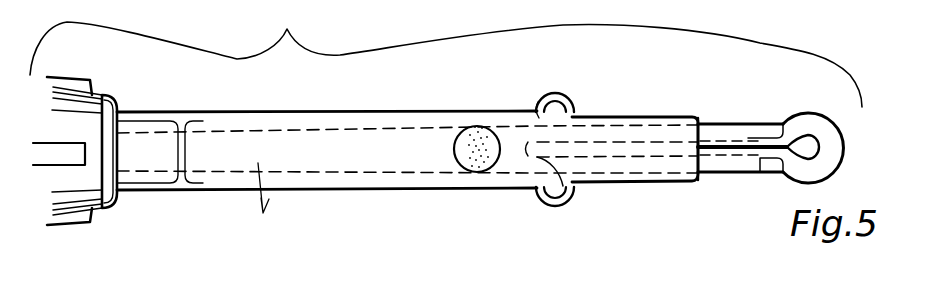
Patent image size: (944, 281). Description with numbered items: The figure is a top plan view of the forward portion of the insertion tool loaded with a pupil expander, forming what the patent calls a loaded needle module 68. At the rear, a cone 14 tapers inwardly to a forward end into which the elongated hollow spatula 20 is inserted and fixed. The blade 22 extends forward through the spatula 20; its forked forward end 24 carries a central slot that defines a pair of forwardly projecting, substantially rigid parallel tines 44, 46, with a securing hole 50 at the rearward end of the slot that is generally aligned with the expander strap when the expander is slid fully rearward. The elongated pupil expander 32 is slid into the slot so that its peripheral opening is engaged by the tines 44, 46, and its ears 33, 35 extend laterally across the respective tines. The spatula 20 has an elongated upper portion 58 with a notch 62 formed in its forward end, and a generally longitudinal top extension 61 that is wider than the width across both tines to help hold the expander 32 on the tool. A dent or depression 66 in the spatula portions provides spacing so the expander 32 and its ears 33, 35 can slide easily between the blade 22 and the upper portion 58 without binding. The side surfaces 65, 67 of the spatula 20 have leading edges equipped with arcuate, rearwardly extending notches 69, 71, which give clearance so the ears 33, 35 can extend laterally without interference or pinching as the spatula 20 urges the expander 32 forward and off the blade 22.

The cone 14 is at (97, 212).
The hollow spatula 20 is at (302, 112).
The blade 22 is at (268, 208).
The forward end 24 is at (633, 115).
The pupil expander 32 is at (803, 116).
The ear 33 is at (560, 96).
The ear 35 is at (550, 200).
The tine 44 is at (747, 140).
The tine 46 is at (762, 172).
The securing hole 50 is at (570, 197).
The elongated upper portion 58 is at (680, 148).
The top extension 61 is at (727, 122).
The notch 62 is at (703, 157).
The side surface 65 is at (450, 193).
The depression 66 is at (455, 165).
The side surface 67 is at (443, 112).
The loaded needle module 68 is at (446, 53).
The notch 69 is at (540, 200).
The notch 71 is at (538, 108).